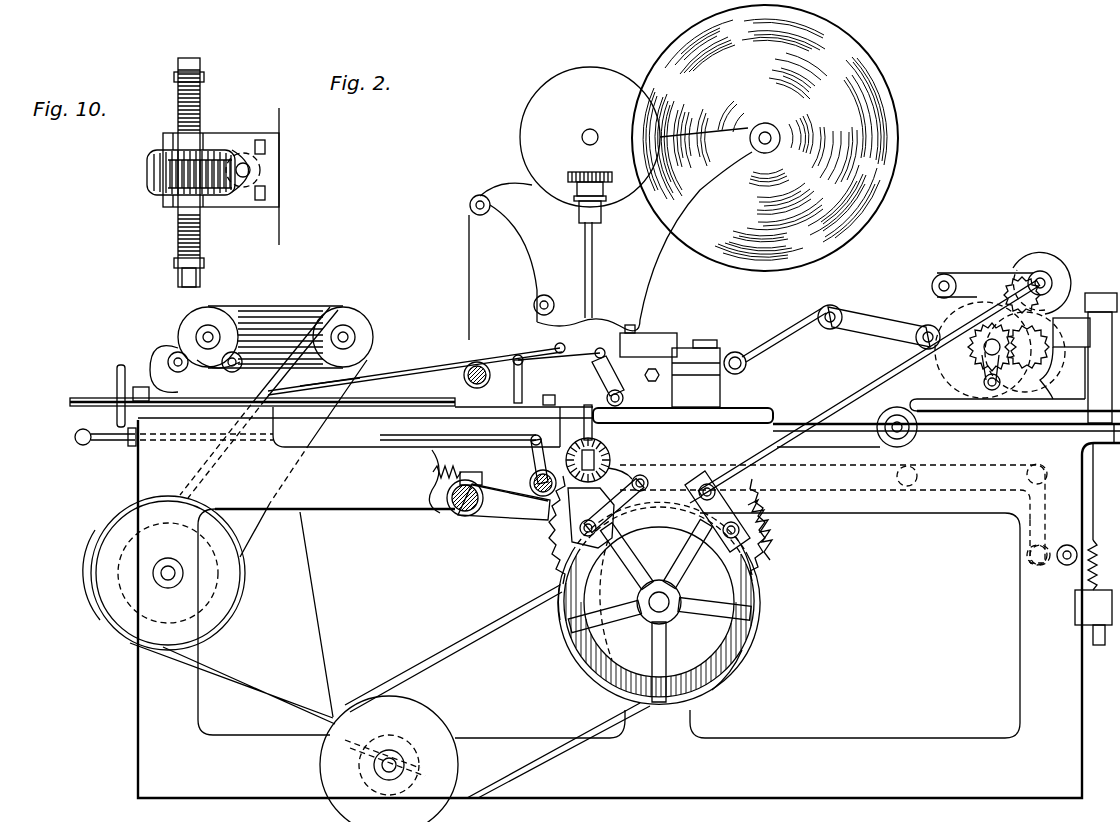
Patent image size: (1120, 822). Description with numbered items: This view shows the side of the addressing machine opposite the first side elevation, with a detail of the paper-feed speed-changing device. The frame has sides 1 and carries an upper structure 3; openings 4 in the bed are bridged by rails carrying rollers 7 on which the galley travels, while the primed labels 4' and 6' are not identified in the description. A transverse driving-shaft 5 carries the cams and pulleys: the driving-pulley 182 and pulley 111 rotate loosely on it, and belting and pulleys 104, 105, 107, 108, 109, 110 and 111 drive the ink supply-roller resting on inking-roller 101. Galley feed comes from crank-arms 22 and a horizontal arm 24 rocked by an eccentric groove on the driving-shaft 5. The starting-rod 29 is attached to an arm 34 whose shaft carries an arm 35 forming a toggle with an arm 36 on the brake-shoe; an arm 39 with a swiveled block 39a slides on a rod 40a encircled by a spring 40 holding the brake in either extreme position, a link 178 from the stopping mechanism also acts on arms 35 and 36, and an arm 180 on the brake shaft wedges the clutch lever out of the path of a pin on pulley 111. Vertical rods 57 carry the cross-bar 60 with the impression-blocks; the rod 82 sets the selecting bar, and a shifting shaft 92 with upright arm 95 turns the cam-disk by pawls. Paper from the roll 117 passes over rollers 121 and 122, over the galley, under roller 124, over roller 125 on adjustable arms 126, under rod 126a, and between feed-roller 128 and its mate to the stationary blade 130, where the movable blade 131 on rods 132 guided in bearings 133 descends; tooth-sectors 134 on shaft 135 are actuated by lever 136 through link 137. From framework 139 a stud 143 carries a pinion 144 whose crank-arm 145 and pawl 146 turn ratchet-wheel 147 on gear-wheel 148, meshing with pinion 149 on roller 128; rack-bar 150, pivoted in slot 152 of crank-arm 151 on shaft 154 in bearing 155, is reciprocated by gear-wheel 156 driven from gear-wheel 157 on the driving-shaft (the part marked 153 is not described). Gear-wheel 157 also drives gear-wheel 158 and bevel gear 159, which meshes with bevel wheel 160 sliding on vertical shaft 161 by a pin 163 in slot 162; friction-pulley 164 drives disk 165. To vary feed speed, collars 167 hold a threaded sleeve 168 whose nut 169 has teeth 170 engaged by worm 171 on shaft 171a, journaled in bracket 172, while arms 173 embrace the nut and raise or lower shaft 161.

In FIG. 2, the sides 1 is at (1003, 513).
In FIG. 2, the upper structure 3 is at (510, 182).
In FIG. 2, the openings 4 is at (331, 437).
In FIG. 2, the rail bar 4' is at (856, 434).
In FIG. 2, the driving-shaft 5 is at (648, 600).
In FIG. 2, the rail 6' is at (828, 435).
In FIG. 2, the rollers 7 is at (885, 420).
In FIG. 2, the crank-arms 22 is at (470, 436).
In FIG. 2, the horizontal arm 24 is at (487, 520).
In FIG. 2, the starting-rod 29 is at (112, 446).
In FIG. 2, the arm 34 is at (535, 466).
In FIG. 2, the arm 35 is at (520, 500).
In FIG. 2, the arm 36 is at (646, 472).
In FIG. 2, the arm 39 is at (486, 478).
In FIG. 2, the swiveled block 39a is at (455, 508).
In FIG. 2, the spring 40 is at (433, 472).
In FIG. 2, the rod 40a is at (433, 492).
In FIG. 2, the rods 57 is at (688, 350).
In FIG. 2, the cross-bar 60 is at (648, 333).
In FIG. 2, the rod 82 is at (505, 357).
In FIG. 2, the longitudinally-shifting shaft 92 is at (548, 394).
In FIG. 2, the upright arm 95 is at (514, 378).
In FIG. 2, the inking-roller 101 is at (160, 356).
In FIG. 2, the pulley 104 is at (196, 334).
In FIG. 2, the pulley 105 is at (373, 334).
In FIG. 2, the pulley 107 is at (112, 553).
In FIG. 2, the pulley 108 is at (97, 612).
In FIG. 2, the pulley 109 is at (410, 756).
In FIG. 2, the pulley 110 is at (430, 720).
In FIG. 2, the pulley 111 is at (620, 657).
In FIG. 2, the roll of paper 117 is at (878, 84).
In FIG. 2, the roller 121 is at (470, 205).
In FIG. 2, the roller 122 is at (472, 366).
In FIG. 2, the roller 124 is at (740, 350).
In FIG. 2, the roller 125 is at (831, 305).
In FIG. 2, the adjustable arms 126 is at (869, 340).
In FIG. 2, the rod 126a is at (924, 347).
In FIG. 2, the roller 128 is at (1057, 268).
In FIG. 2, the stationary blade 130 is at (1068, 318).
In FIG. 2, the movable cutting-blade 131 is at (1102, 347).
In FIG. 2, the rods 132 is at (1100, 477).
In FIG. 2, the bearings 133 is at (1075, 622).
In FIG. 2, the tooth-sectors 134 is at (1063, 565).
In FIG. 2, the shaft 135 is at (1060, 560).
In FIG. 2, the lever 136 is at (863, 488).
In FIG. 2, the link 137 is at (1033, 535).
In FIG. 2, the framework 139 is at (958, 378).
In FIG. 2, the stud 143 is at (968, 340).
In FIG. 2, the pinion 144 is at (1012, 382).
In FIG. 2, the crank-arm 145 is at (998, 392).
In FIG. 2, the pawl 146 is at (985, 390).
In FIG. 2, the ratchet-wheel 147 is at (1067, 373).
In FIG. 2, the gear-wheel 148 is at (982, 286).
In FIG. 2, the pinion 149 is at (1008, 284).
In FIG. 2, the rack-bar 150 is at (856, 395).
In FIG. 2, the crank-arm 151 is at (714, 470).
In FIG. 2, the slot 152 is at (703, 472).
In FIG. 2, the pin 153 is at (716, 494).
In FIG. 2, the short shaft 154 is at (746, 540).
In FIG. 2, the bearing 155 is at (740, 530).
In FIG. 2, the gear-wheel 156 is at (762, 556).
In FIG. 2, the gear-wheel 157 is at (758, 608).
In FIG. 2, the gear-wheel 158 is at (552, 560).
In FIG. 2, the bevel gear-wheel 159 is at (628, 468).
In FIG. 2, the bevel wheel 160 is at (603, 448).
In FIG. 10, the vertical shaft 161 is at (197, 282).
In FIG. 2, the vertical shaft 161 is at (604, 260).
In FIG. 2, the slot 162 is at (582, 425).
In FIG. 2, the pin 163 is at (623, 398).
In FIG. 2, the friction-pulley 164 is at (612, 182).
In FIG. 2, the disk 165 is at (542, 92).
In FIG. 10, the collars 167 is at (177, 80).
In FIG. 10, the sleeve 168 is at (201, 237).
In FIG. 10, the nut 169 is at (168, 186).
In FIG. 10, the teeth 170 is at (148, 168).
In FIG. 10, the worm 171 is at (266, 170).
In FIG. 10, the shaft 171a is at (243, 162).
In FIG. 2, the shaft 171a is at (382, 386).
In FIG. 10, the bracket 172 is at (280, 142).
In FIG. 10, the projecting arms 173 is at (163, 140).
In FIG. 2, the link 178 is at (625, 503).
In FIG. 2, the arm 180 is at (560, 607).
In FIG. 2, the driving-pulley 182 is at (738, 664).